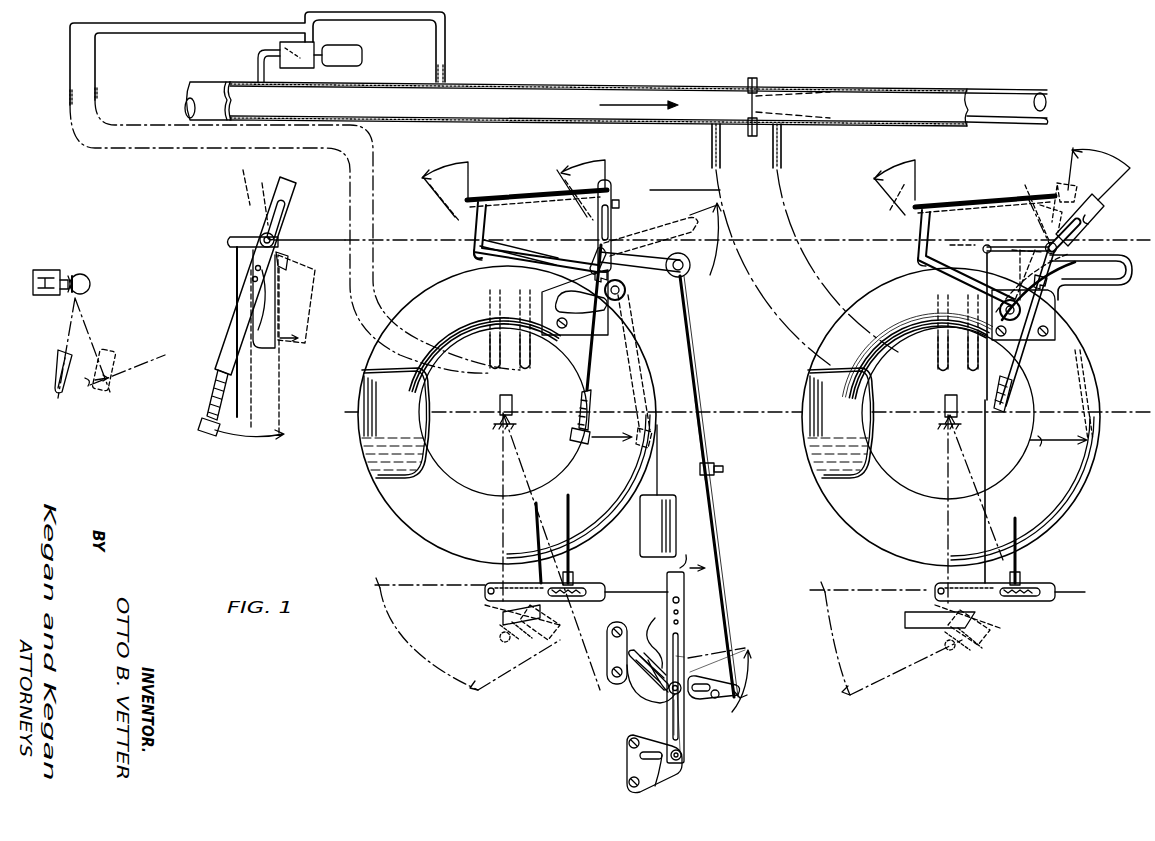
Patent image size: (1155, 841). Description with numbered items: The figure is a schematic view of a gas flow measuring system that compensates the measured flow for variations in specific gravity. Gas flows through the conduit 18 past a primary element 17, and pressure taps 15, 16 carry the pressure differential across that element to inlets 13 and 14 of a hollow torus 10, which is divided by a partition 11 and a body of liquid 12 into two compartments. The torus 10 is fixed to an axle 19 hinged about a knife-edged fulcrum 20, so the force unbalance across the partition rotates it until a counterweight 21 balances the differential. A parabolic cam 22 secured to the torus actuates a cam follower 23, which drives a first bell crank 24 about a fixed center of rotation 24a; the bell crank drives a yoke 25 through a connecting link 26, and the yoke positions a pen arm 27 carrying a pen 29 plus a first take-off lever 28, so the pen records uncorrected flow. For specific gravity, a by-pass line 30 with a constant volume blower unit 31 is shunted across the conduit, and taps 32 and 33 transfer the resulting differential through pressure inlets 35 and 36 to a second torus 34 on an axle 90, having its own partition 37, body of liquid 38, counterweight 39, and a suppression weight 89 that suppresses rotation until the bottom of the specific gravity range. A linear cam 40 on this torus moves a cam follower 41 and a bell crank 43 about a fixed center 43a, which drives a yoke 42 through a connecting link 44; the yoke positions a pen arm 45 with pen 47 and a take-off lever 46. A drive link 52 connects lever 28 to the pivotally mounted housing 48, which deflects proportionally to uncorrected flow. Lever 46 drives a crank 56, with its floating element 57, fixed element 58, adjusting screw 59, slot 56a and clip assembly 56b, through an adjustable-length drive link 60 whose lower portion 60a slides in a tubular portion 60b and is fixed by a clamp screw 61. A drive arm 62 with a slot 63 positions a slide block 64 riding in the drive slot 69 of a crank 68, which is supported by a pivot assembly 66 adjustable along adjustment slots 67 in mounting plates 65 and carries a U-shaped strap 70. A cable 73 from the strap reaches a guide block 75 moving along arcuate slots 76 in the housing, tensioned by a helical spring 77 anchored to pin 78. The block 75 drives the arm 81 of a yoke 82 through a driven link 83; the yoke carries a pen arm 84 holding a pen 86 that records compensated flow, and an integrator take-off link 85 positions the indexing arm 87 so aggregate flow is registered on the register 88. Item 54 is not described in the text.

The hollow torus 10 is at (850, 325).
The partition 11 is at (985, 245).
The body of liquid 12 is at (820, 464).
The inlet 13 is at (938, 355).
The inlet 14 is at (967, 365).
The pressure tap 15 is at (777, 168).
The pressure tap 16 is at (716, 168).
The primary element 17 is at (760, 88).
The conduit 18 is at (195, 95).
The axle 19 is at (945, 408).
The knife-edged fulcrum 20 is at (496, 425).
The counterweight 21 is at (908, 624).
The cam 22 is at (1128, 286).
The cam follower 23 is at (1058, 318).
The first bell crank 24 is at (918, 238).
The fixed center of rotation 24a is at (916, 260).
The yoke 25 is at (1105, 214).
The connecting link 26 is at (968, 203).
The pen arm 27 is at (1050, 290).
The first take-off lever 28 is at (1010, 246).
The pen 29 is at (1020, 350).
The by-pass line 30 is at (447, 42).
The constant volume blower unit 31 is at (310, 54).
The pressure tap 32 is at (68, 96).
The pressure tap 33 is at (98, 92).
The torus 34 is at (435, 285).
The pressure inlet 35 is at (500, 352).
The pressure inlet 36 is at (532, 352).
The partition 37 is at (486, 250).
The body of liquid 38 is at (372, 462).
The counterweight 39 is at (503, 620).
The cam 40 is at (630, 302).
The cam follower 41 is at (622, 298).
The yoke 42 is at (616, 198).
The bell crank 43 is at (474, 238).
The fixed center of rotation 43a is at (472, 258).
The connecting link 44 is at (498, 196).
The pen arm 45 is at (598, 266).
The take-off lever 46 is at (690, 246).
The pen 47 is at (585, 380).
The housing 48 is at (485, 596).
The drive link 52 is at (539, 524).
The bracket 54 is at (607, 665).
The crank 56 is at (716, 701).
The slot 56a is at (722, 700).
The clip assembly 56b is at (740, 695).
The floating element 57 is at (652, 660).
The fixed element 58 is at (690, 660).
The adjusting screw 59 is at (660, 624).
The adjustable-length drive link 60 is at (699, 318).
The lower portion 60a is at (724, 548).
The tubular portion 60b is at (705, 386).
The clamp screw 61 is at (717, 462).
The drive arm 62 is at (668, 690).
The slot 63 is at (652, 675).
The slide block 64 is at (685, 705).
The mounting plate 65 is at (628, 764).
The pivot assembly 66 is at (682, 760).
The adjustment slot 67 is at (657, 784).
The crank 68 is at (684, 656).
The drive slot 69 is at (674, 712).
The U-shaped strap 70 is at (668, 578).
The cable 73 is at (598, 600).
The guide block 75 is at (575, 580).
The arcuate slot 76 is at (555, 640).
The helical spring 77 is at (485, 606).
The anchoring pin 78 is at (489, 588).
The arm 81 is at (248, 238).
The yoke 82 is at (290, 203).
The driven link 83 is at (236, 290).
The pen arm 84 is at (254, 268).
The integrator take-off link 85 is at (283, 318).
The pen 86 is at (238, 332).
The indexing arm 87 is at (60, 362).
The register 88 is at (45, 270).
The suppression weight 89 is at (660, 520).
The axle 90 is at (500, 405).